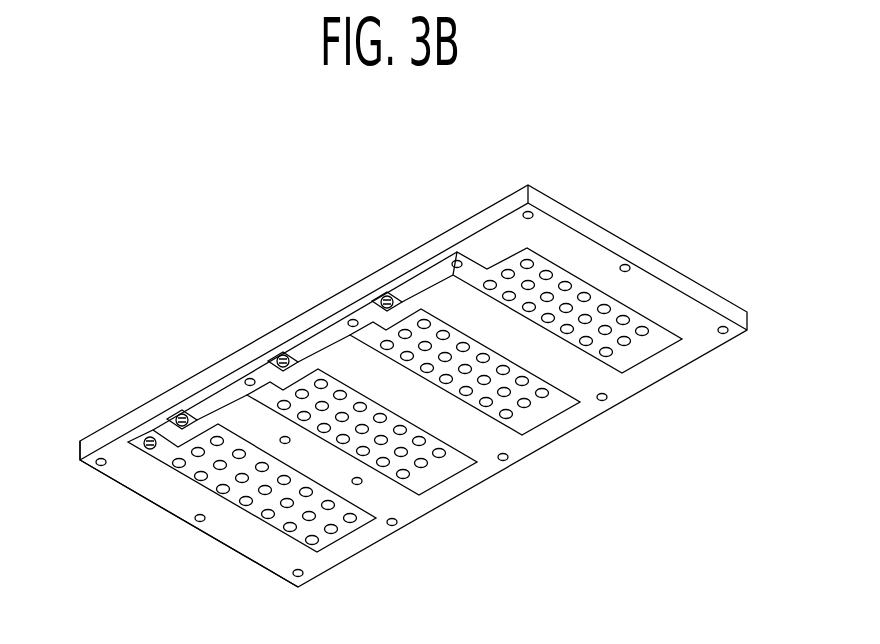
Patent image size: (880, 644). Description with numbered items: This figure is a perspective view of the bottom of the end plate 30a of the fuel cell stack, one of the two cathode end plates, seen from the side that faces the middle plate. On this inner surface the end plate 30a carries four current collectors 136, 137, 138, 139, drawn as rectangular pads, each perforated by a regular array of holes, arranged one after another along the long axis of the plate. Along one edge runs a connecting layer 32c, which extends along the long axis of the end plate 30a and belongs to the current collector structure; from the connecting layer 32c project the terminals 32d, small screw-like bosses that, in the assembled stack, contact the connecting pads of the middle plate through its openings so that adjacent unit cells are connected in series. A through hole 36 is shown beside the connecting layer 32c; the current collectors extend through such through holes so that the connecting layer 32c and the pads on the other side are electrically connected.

The end plate 30a is at (598, 178).
The connecting layer 32c is at (230, 392).
The terminal 32d is at (176, 417).
The through hole 36 is at (251, 378).
The current collector 136 is at (357, 548).
The current collector 137 is at (455, 484).
The current collector 138 is at (565, 428).
The current collector 139 is at (660, 380).